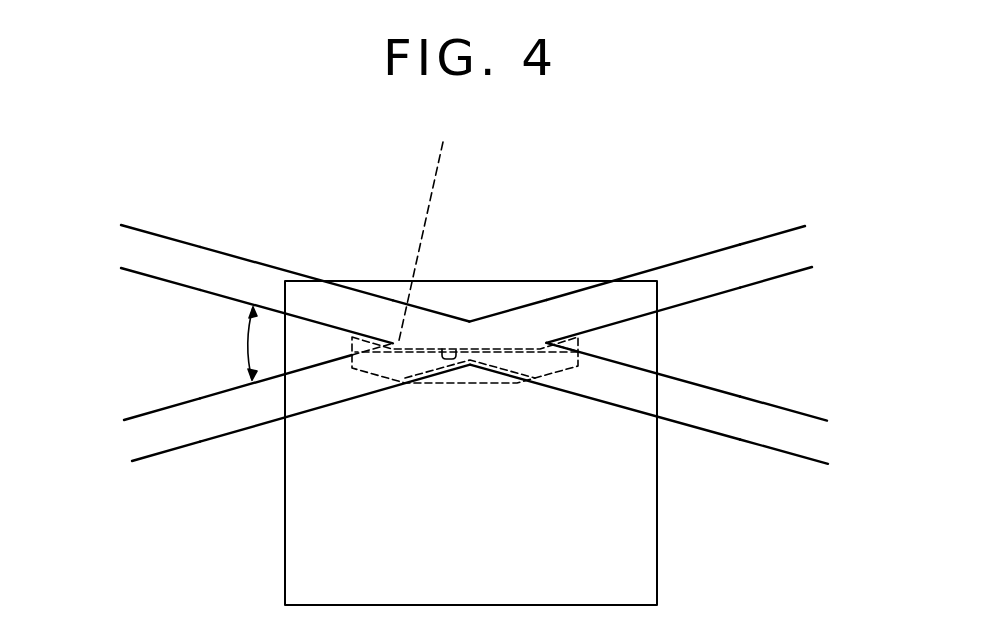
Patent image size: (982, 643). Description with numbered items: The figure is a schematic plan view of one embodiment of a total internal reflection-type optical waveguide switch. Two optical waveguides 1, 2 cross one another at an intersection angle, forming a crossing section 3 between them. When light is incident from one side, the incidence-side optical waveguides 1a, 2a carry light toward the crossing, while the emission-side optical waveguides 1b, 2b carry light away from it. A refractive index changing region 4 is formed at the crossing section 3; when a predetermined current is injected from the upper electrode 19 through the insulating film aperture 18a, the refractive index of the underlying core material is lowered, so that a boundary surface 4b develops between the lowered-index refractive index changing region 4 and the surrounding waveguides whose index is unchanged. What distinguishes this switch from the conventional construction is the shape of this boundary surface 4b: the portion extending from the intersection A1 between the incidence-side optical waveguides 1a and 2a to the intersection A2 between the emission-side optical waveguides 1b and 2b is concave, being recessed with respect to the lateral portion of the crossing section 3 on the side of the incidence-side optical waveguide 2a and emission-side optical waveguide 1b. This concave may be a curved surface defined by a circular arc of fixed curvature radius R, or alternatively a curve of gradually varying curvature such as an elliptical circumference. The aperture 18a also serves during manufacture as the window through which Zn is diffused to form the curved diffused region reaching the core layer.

The optical waveguide 1 is at (468, 349).
The incidence-side optical waveguide 1a is at (182, 435).
The emission-side optical waveguide 1b is at (753, 257).
The optical waveguide 2 is at (474, 350).
The incidence-side optical waveguide 2a is at (178, 257).
The emission-side optical waveguide 2b is at (787, 438).
The crossing section 3 is at (512, 320).
The refractive index changing region 4 is at (463, 368).
The boundary surface 4b is at (449, 348).
The insulating film aperture 18a is at (580, 353).
The upper electrode 19 is at (640, 517).
The intersection A1 is at (395, 338).
The intersection A2 is at (541, 337).
The curvature radius R is at (420, 243).